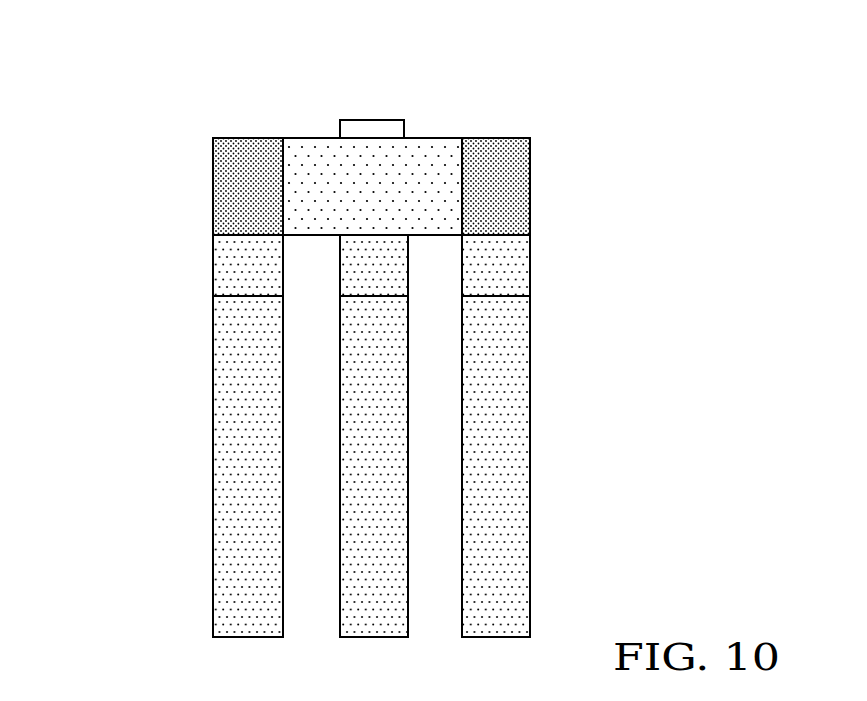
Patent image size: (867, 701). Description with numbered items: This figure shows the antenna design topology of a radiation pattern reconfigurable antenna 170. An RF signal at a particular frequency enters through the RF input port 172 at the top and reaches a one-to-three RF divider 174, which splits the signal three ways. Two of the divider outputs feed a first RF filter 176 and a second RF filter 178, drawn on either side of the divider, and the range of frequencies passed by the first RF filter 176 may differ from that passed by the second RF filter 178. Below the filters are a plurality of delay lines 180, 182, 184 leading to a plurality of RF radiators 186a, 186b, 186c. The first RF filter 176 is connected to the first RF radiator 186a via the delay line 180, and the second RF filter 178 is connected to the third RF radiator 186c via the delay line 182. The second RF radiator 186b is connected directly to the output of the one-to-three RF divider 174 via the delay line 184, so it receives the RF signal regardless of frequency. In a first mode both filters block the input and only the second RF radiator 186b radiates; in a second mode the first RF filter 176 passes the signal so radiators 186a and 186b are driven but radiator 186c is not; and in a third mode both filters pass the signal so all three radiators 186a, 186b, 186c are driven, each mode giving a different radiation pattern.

The radiation pattern reconfigurable antenna 170 is at (198, 78).
The RF input port 172 is at (353, 120).
The one-to-three RF divider 174 is at (415, 148).
The first RF filter 176 is at (225, 155).
The second RF filter 178 is at (522, 153).
The delay line 180 is at (230, 282).
The delay line 182 is at (522, 272).
The delay line 184 is at (375, 258).
The first RF radiator 186a is at (238, 467).
The second RF radiator 186b is at (392, 417).
The third RF radiator 186c is at (512, 463).